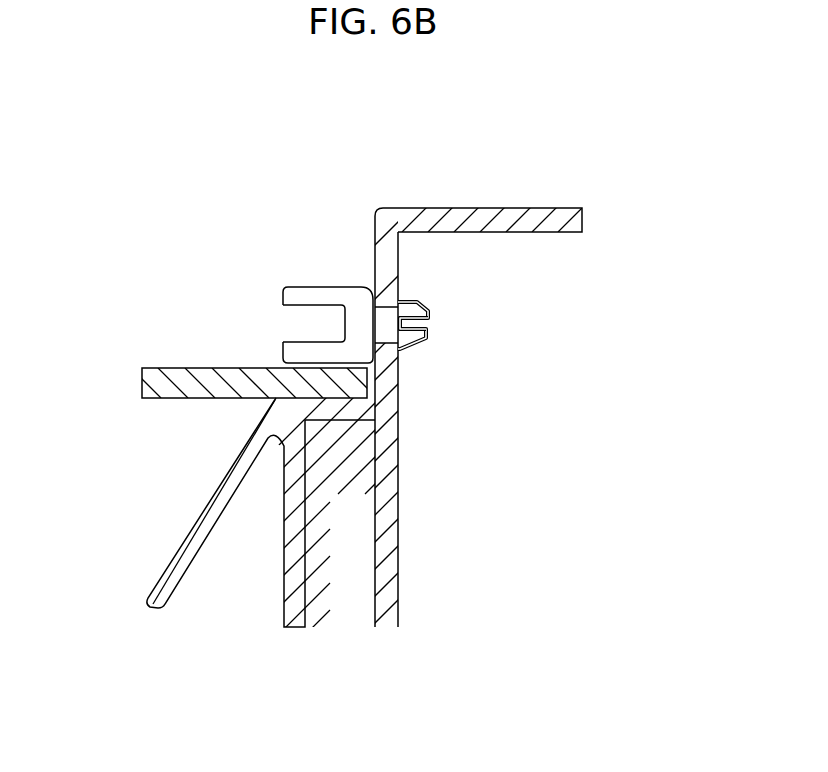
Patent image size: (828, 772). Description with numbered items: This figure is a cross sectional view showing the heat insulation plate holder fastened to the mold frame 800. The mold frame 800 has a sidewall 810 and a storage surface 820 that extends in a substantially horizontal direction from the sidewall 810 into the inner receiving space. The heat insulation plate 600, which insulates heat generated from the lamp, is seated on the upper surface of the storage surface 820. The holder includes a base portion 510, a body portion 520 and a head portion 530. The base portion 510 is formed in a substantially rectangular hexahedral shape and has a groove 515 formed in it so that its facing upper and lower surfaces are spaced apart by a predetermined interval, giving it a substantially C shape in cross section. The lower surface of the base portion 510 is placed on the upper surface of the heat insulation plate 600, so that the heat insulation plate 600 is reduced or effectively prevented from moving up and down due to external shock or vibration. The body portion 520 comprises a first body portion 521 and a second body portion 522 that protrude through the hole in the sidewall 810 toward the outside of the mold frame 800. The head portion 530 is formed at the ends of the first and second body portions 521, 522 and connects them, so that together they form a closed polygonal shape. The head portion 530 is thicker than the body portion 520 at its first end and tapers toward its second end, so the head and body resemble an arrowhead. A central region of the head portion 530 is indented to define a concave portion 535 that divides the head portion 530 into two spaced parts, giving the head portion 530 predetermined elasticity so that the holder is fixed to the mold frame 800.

The mold frame 800 is at (499, 391).
The sidewall 810 is at (398, 378).
The storage surface 820 is at (347, 414).
The heat insulation plate 600 is at (152, 380).
The base portion 510 is at (275, 279).
The groove 515 is at (292, 329).
The body portion 520 is at (525, 566).
The first body portion 521 is at (398, 279).
The second body portion 522 is at (398, 361).
The head portion 530 is at (456, 317).
The concave portion 535 is at (428, 324).